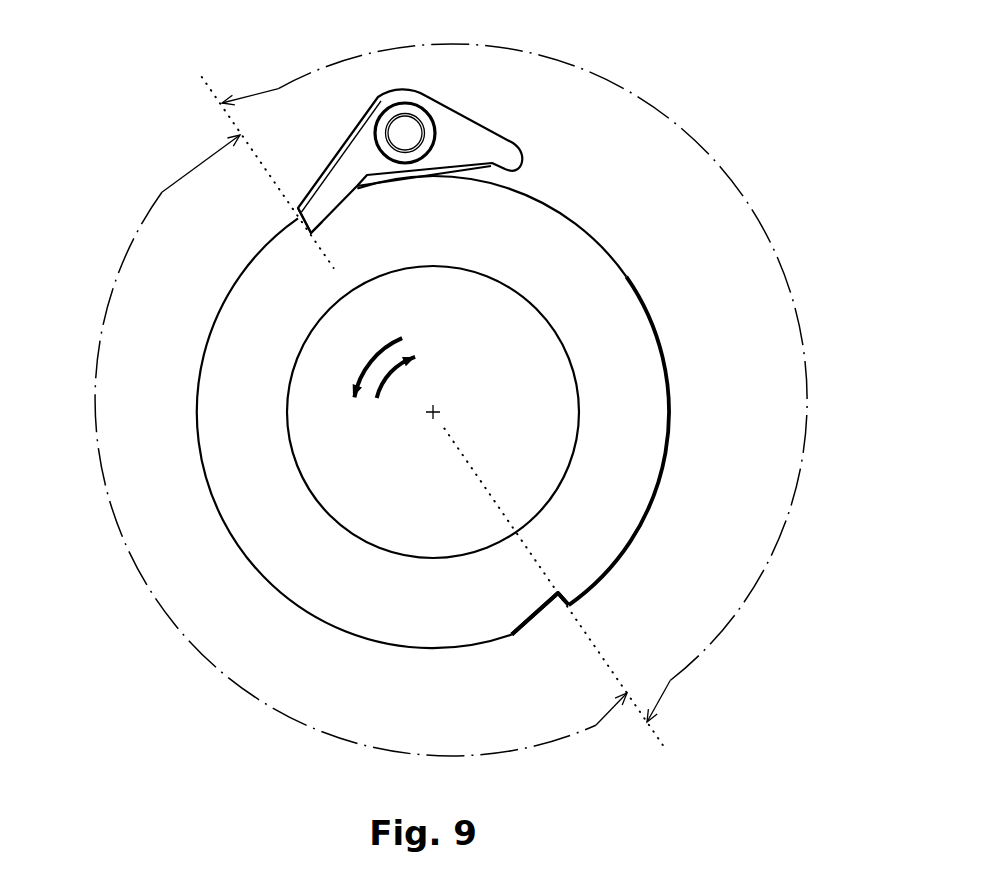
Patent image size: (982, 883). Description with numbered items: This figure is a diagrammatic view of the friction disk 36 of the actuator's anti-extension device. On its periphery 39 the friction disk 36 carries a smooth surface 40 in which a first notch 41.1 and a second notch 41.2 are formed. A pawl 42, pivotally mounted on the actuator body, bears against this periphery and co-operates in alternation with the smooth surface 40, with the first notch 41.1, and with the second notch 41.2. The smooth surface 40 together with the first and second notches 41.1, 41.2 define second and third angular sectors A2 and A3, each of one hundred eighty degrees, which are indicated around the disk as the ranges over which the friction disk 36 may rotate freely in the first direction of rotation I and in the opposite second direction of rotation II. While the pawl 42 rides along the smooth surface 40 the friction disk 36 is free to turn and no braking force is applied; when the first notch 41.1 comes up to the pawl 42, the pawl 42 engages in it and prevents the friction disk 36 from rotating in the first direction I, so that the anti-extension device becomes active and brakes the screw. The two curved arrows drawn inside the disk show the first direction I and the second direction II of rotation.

The friction disk 36 is at (656, 405).
The periphery 39 is at (197, 431).
The smooth surface 40 is at (247, 560).
The first notch 41.1 is at (313, 221).
The second notch 41.2 is at (548, 613).
The pawl 42 is at (365, 148).
The second angular sector A2 is at (158, 212).
The third angular sector A3 is at (768, 580).
The first direction of rotation I is at (397, 373).
The second direction of rotation II is at (378, 354).